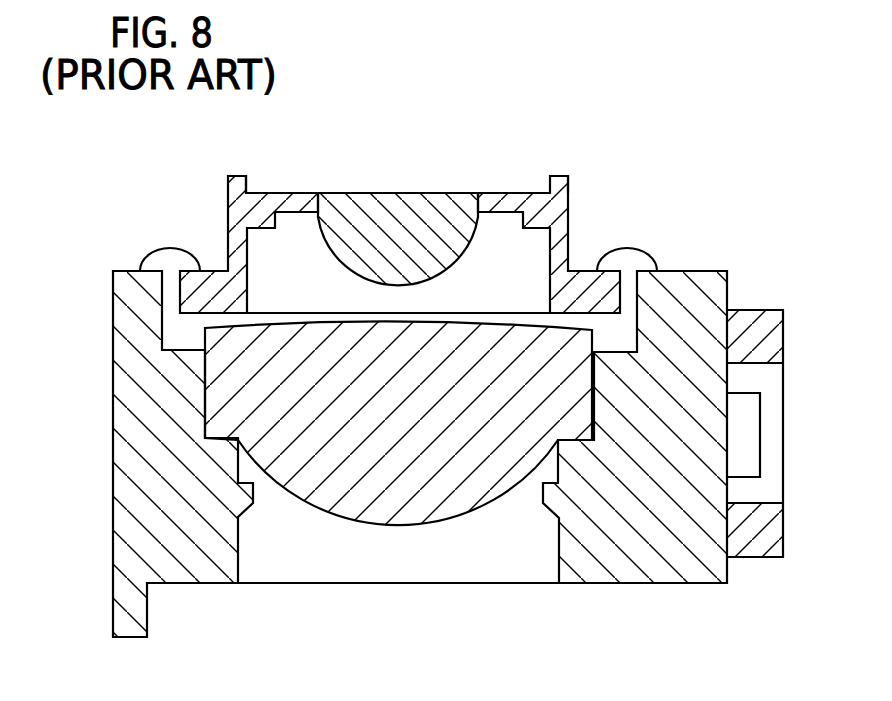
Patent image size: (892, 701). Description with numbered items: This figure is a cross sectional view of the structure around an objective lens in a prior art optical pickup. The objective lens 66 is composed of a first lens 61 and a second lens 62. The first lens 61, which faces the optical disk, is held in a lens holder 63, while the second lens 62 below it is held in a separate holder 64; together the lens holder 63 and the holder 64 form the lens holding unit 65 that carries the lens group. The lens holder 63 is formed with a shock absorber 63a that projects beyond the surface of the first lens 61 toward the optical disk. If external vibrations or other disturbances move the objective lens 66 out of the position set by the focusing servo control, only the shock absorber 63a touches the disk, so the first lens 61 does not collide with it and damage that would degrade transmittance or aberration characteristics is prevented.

The first lens 61 is at (347, 258).
The second lens 62 is at (268, 380).
The lens holder 63 is at (414, 213).
The shock absorber 63a is at (237, 176).
The holder for the second lens 64 is at (680, 283).
The lens holding unit 65 is at (448, 375).
The objective lens 66 is at (348, 347).